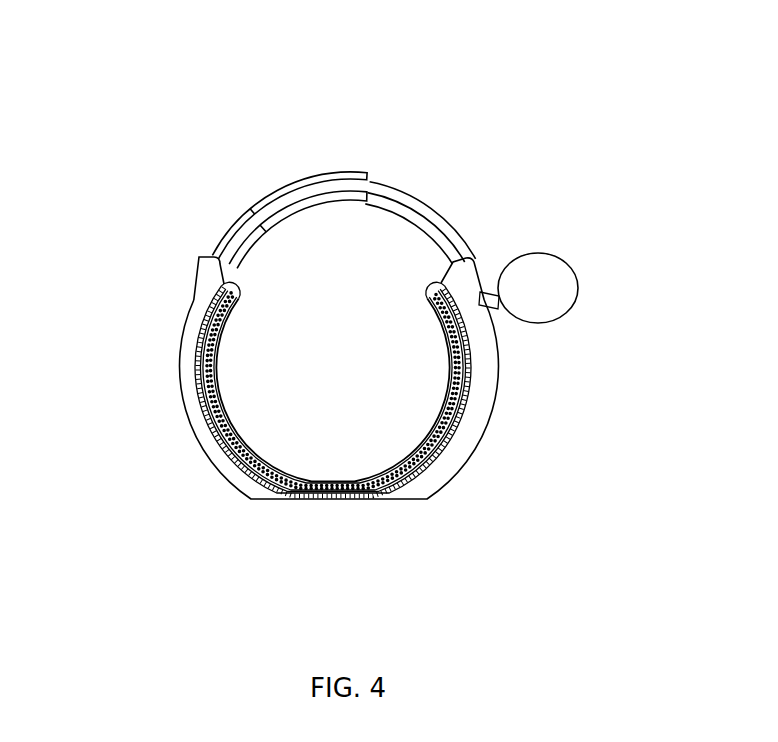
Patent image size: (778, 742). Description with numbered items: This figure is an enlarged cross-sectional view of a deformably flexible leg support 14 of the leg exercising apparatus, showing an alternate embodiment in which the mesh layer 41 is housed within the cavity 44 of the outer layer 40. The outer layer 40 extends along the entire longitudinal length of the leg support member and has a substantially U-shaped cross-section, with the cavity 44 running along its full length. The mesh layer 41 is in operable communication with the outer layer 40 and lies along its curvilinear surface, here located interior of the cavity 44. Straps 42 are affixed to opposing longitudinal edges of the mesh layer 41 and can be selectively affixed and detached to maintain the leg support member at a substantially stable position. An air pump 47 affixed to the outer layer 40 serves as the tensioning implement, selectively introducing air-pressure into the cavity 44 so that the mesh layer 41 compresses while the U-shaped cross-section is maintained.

The leg support 14 is at (253, 165).
The outer layer 40 is at (193, 302).
The mesh layer 41 is at (248, 460).
The straps 42 is at (420, 217).
The cavity 44 is at (427, 463).
The air pump 47 is at (545, 279).